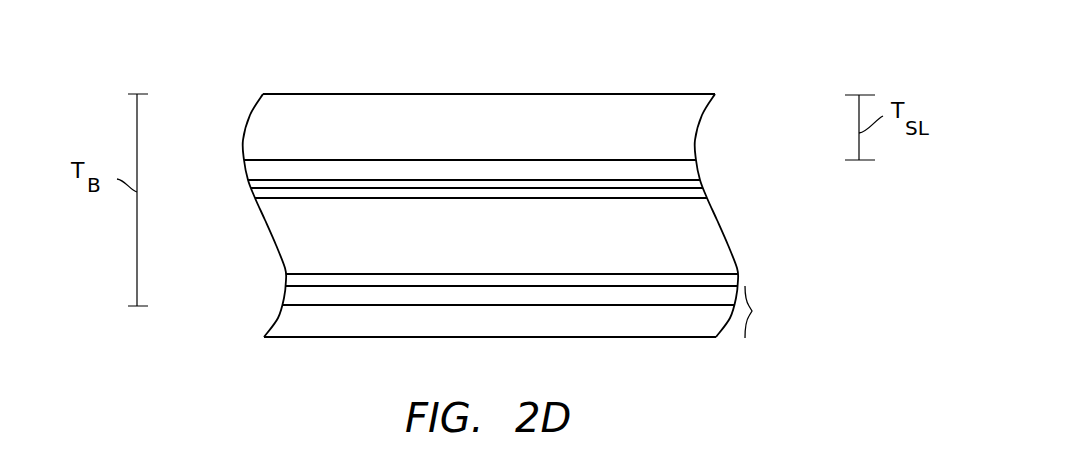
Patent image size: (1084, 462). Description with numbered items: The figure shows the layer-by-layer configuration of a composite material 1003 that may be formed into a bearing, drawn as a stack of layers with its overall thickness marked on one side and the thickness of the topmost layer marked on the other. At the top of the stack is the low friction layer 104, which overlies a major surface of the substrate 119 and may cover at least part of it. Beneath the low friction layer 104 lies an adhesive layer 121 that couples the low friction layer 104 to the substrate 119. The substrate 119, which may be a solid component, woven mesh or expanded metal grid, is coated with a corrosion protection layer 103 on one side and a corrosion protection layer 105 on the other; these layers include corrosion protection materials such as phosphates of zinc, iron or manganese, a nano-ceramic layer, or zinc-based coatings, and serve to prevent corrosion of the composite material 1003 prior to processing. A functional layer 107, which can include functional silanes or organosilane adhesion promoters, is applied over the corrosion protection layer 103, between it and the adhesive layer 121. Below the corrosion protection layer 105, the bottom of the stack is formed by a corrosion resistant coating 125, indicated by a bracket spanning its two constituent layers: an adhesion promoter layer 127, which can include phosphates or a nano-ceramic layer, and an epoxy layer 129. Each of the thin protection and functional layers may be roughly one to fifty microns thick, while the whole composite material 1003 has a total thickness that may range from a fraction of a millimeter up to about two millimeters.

The composite material 1003 is at (730, 67).
The low friction layer 104 is at (245, 130).
The adhesive layer 121 is at (247, 172).
The functional layer 107 is at (702, 183).
The corrosion protection layer 103 is at (705, 195).
The substrate 119 is at (268, 222).
The corrosion protection layer 105 is at (738, 278).
The adhesion promoter layer 127 is at (283, 295).
The epoxy layer 129 is at (272, 327).
The corrosion resistant coating 125 is at (771, 312).